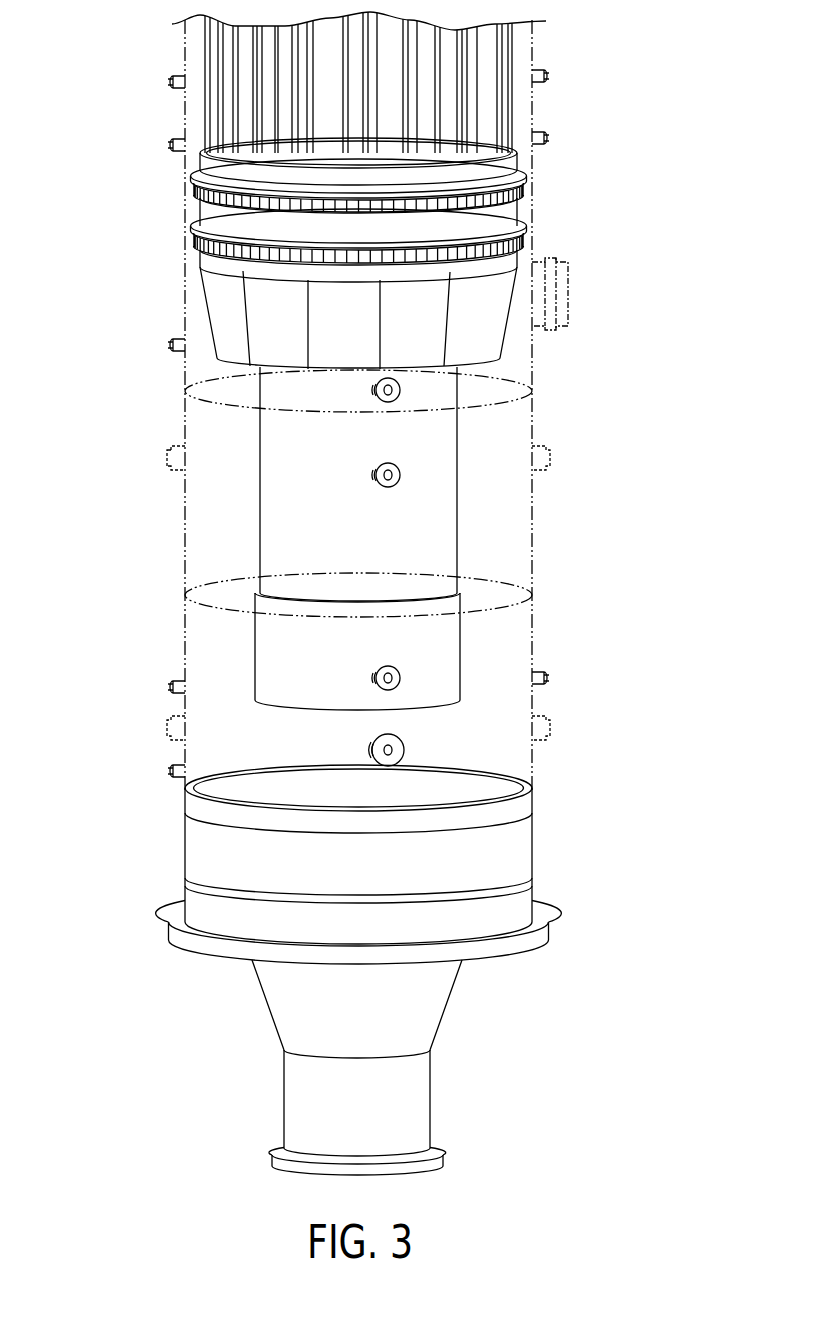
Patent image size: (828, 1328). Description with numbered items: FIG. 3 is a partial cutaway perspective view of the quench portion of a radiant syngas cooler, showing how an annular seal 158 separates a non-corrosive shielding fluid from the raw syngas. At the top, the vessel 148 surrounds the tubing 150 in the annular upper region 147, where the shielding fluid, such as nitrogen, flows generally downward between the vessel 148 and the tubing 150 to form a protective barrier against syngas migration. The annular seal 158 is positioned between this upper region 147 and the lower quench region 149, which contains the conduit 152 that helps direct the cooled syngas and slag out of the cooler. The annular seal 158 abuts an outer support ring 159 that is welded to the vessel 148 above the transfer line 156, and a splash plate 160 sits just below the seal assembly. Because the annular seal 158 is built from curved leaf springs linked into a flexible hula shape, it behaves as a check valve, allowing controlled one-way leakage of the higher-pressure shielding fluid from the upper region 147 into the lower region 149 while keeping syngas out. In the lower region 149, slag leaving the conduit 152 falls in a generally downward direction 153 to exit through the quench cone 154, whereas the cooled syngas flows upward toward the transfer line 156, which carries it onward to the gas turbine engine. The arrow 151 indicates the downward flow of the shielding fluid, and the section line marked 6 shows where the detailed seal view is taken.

The upper region 147 is at (582, 62).
The vessel 148 is at (183, 54).
The lower region 149 is at (607, 395).
The tubing 150 is at (227, 103).
The flow direction 151 is at (155, 148).
The conduit 152 is at (260, 515).
The downward direction 153 is at (480, 497).
The quench cone 154 is at (433, 1098).
The transfer line 156 is at (570, 292).
The annular seal 158 is at (212, 240).
The outer support ring 159 is at (502, 210).
The splash plate 160 is at (227, 303).
The section line 6- 6 is at (527, 155).